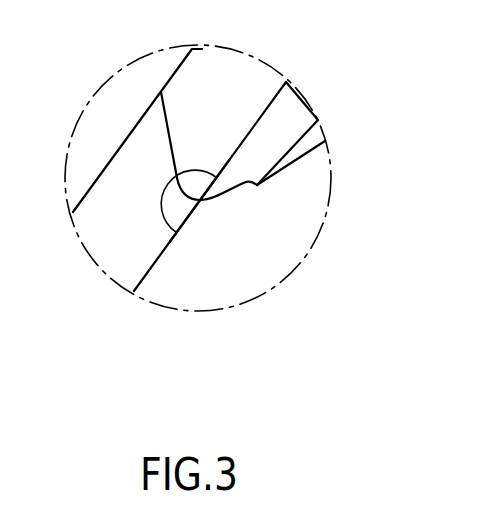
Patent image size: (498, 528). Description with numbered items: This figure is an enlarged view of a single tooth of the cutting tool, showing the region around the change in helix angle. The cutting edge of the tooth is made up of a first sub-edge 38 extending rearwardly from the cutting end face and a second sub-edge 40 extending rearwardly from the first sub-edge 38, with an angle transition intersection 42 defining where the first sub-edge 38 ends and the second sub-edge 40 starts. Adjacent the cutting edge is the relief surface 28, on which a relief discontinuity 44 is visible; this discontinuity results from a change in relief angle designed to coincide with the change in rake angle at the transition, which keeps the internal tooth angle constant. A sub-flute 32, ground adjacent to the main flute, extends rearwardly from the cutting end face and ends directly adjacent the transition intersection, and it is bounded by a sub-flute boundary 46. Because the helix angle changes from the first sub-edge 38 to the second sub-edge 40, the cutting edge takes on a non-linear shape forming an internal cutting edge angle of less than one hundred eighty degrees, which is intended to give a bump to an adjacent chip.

The relief surface 28 is at (226, 61).
The sub-flute 32 is at (296, 110).
The first sub-edge 38 is at (228, 214).
The second sub-edge 40 is at (163, 282).
The angle transition intersection 42 is at (203, 230).
The relief discontinuity 44 is at (152, 133).
The sub-flute boundary 46 is at (308, 176).